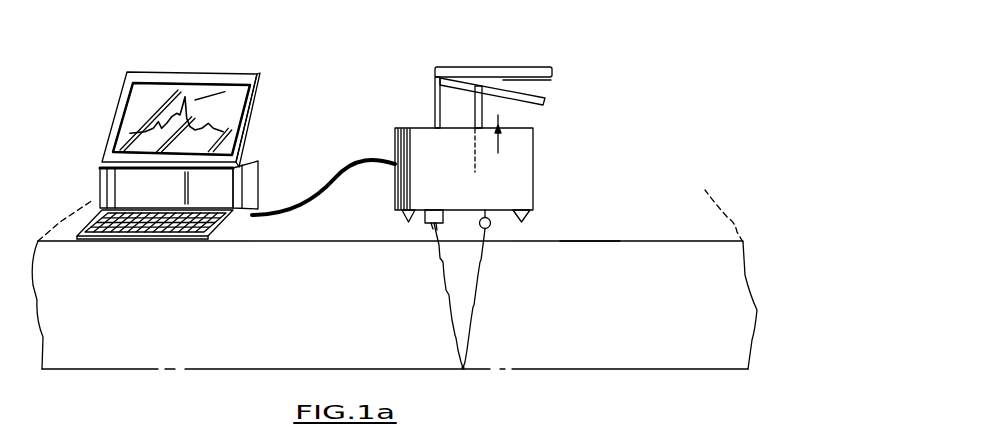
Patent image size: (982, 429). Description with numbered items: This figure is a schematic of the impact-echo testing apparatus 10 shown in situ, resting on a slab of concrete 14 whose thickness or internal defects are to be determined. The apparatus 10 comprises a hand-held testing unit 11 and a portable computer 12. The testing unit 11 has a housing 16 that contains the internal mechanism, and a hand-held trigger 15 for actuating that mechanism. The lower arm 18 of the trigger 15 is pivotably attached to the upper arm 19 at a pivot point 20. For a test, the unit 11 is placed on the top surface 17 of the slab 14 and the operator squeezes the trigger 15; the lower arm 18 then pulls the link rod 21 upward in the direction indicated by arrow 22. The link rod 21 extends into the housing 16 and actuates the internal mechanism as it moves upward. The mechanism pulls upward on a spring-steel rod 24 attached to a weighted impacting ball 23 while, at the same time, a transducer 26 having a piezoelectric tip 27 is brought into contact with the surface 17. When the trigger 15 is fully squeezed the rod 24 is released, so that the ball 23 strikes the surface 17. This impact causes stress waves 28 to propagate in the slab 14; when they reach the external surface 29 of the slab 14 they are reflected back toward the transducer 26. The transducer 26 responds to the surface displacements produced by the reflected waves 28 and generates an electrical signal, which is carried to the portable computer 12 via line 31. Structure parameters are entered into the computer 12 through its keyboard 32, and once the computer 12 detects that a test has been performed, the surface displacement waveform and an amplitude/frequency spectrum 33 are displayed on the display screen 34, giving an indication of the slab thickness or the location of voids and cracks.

The testing apparatus 10 is at (488, 204).
The hand-held testing unit 11 is at (527, 167).
The portable computer 12 is at (255, 175).
The slab of concrete 14 is at (315, 317).
The hand-held trigger 15 is at (562, 83).
The housing 16 is at (412, 147).
The top surface 17 is at (582, 235).
The lower arm 18 is at (547, 100).
The upper arm 19 is at (530, 67).
The pivot point 20 is at (437, 78).
The link rod 21 is at (473, 103).
The arrow 22 is at (500, 142).
The weighted impacting ball 23 is at (490, 230).
The spring-steel rod 24 is at (475, 207).
The transducer 26 is at (433, 210).
The piezoelectric tip 27 is at (432, 227).
The stress waves 28 is at (477, 303).
The external surface 29 is at (463, 368).
The line 31 is at (278, 216).
The keyboard 32 is at (125, 226).
The amplitude/frequency spectrum 33 is at (188, 103).
The display screen 34 is at (138, 105).